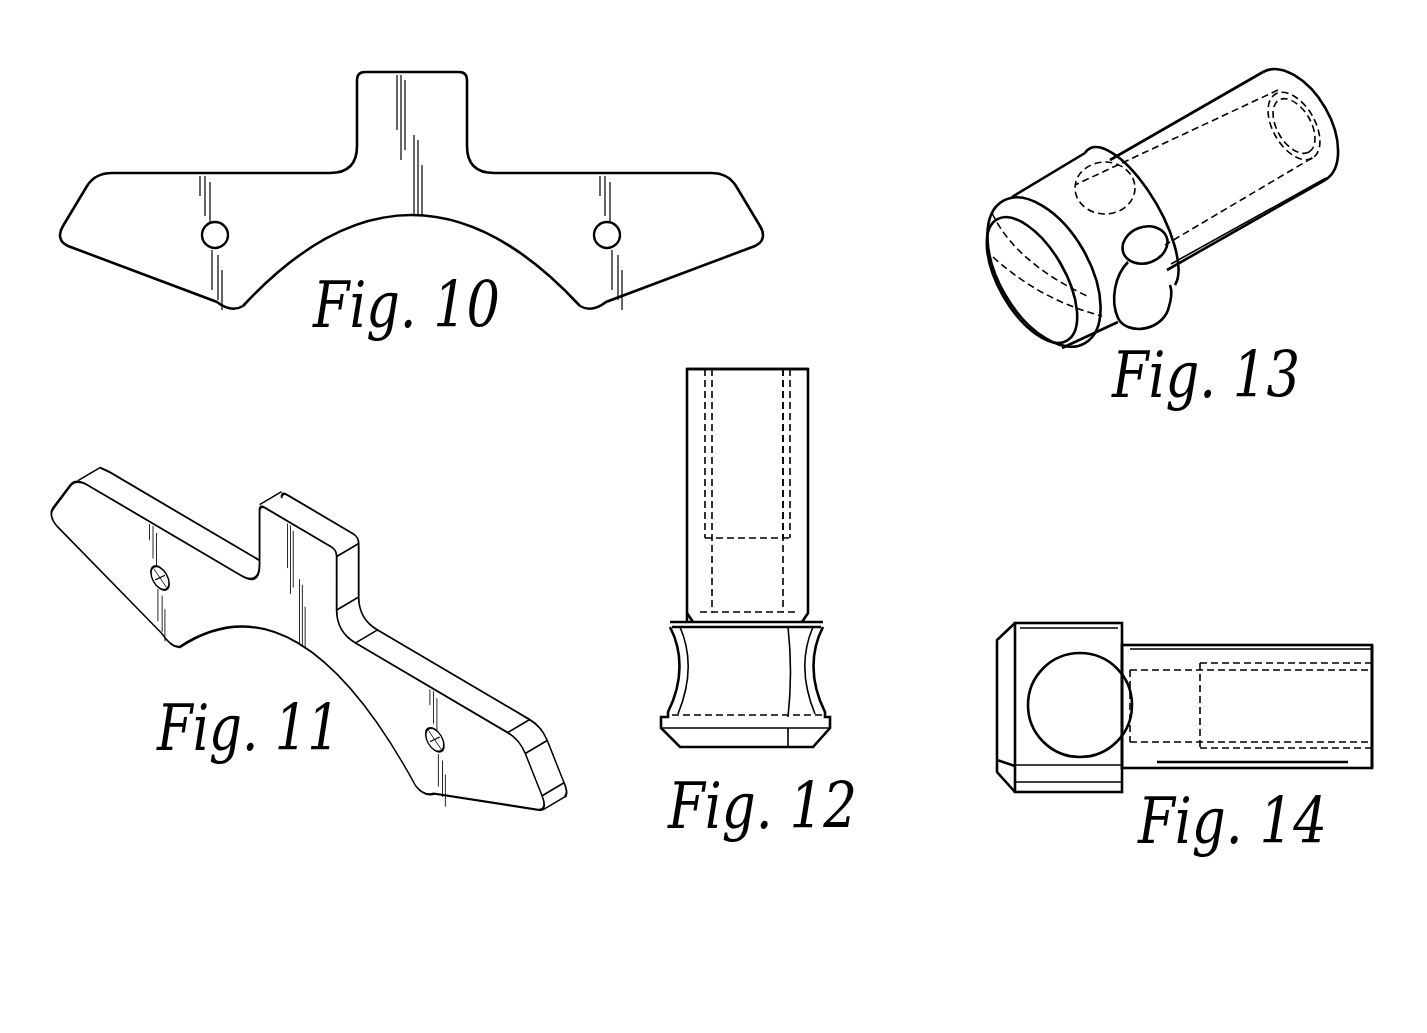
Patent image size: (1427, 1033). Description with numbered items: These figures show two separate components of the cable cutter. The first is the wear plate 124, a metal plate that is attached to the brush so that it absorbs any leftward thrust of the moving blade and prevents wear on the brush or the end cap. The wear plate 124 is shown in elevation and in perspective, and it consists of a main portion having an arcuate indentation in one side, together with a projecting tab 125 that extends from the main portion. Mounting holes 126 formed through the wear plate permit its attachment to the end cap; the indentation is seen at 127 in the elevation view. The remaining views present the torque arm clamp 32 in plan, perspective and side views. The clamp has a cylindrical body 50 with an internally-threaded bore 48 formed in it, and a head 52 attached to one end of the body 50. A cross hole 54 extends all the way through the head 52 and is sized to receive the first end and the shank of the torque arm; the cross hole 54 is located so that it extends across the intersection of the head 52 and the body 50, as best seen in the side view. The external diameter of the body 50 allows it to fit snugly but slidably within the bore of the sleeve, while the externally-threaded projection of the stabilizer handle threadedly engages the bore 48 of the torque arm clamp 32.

In FIG. 10, the wear plate 124 is at (555, 170).
In FIG. 11, the wear plate 124 is at (372, 617).
In FIG. 10, the projecting tab 125 is at (455, 92).
In FIG. 10, the mounting holes 126 is at (215, 236).
In FIG. 11, the mounting holes 126 is at (160, 578).
In FIG. 10, the arcuate recess 127 is at (355, 205).
In FIG. 12, the torque arm clamp 32 is at (783, 567).
In FIG. 13, the torque arm clamp 32 is at (1163, 130).
In FIG. 14, the torque arm clamp 32 is at (1168, 644).
In FIG. 12, the internally-threaded bore 48 is at (783, 468).
In FIG. 13, the internally-threaded bore 48 is at (1163, 273).
In FIG. 14, the internally-threaded bore 48 is at (1290, 687).
In FIG. 12, the cylindrical body 50 is at (800, 368).
In FIG. 13, the cylindrical body 50 is at (1337, 158).
In FIG. 14, the cylindrical body 50 is at (1375, 653).
In FIG. 12, the head 52 is at (797, 744).
In FIG. 13, the head 52 is at (1027, 317).
In FIG. 14, the head 52 is at (997, 660).
In FIG. 13, the cross hole 54 is at (1133, 308).
In FIG. 14, the cross hole 54 is at (1080, 665).